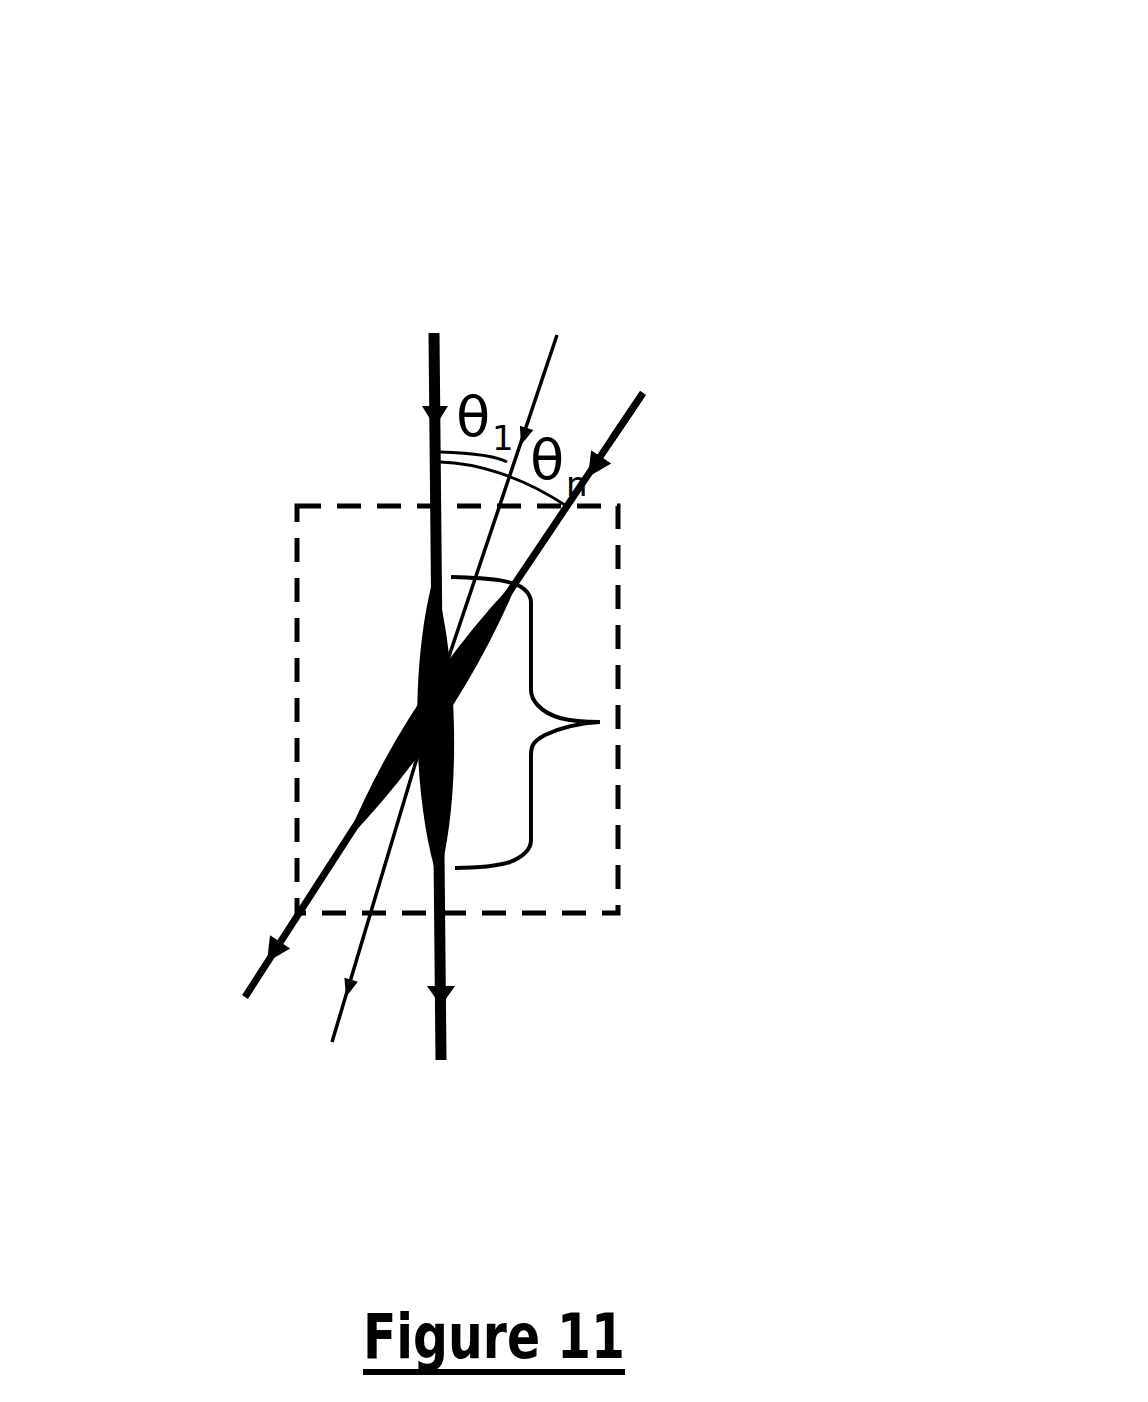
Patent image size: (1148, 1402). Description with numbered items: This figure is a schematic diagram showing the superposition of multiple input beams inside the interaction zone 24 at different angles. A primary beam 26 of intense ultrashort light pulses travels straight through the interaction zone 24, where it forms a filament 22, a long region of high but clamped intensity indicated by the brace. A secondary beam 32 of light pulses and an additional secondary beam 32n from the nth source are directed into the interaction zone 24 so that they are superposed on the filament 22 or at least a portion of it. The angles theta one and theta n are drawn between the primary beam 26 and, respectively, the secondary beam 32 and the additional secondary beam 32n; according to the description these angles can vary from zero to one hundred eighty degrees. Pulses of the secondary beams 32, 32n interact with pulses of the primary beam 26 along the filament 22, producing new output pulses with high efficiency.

The primary beam 26 is at (417, 333).
The interaction zone 24 is at (623, 504).
The secondary beam 32 is at (557, 335).
The additional secondary beam 32n is at (645, 381).
The filament 22 is at (600, 722).